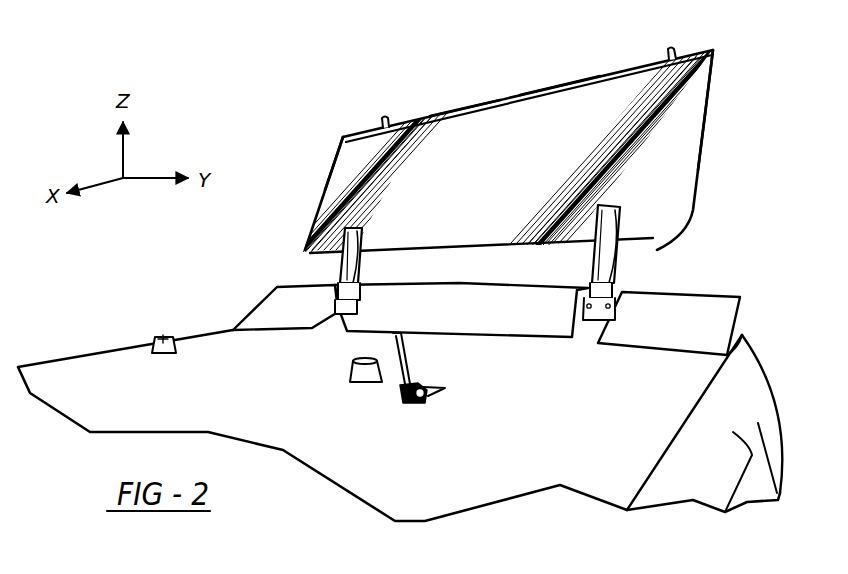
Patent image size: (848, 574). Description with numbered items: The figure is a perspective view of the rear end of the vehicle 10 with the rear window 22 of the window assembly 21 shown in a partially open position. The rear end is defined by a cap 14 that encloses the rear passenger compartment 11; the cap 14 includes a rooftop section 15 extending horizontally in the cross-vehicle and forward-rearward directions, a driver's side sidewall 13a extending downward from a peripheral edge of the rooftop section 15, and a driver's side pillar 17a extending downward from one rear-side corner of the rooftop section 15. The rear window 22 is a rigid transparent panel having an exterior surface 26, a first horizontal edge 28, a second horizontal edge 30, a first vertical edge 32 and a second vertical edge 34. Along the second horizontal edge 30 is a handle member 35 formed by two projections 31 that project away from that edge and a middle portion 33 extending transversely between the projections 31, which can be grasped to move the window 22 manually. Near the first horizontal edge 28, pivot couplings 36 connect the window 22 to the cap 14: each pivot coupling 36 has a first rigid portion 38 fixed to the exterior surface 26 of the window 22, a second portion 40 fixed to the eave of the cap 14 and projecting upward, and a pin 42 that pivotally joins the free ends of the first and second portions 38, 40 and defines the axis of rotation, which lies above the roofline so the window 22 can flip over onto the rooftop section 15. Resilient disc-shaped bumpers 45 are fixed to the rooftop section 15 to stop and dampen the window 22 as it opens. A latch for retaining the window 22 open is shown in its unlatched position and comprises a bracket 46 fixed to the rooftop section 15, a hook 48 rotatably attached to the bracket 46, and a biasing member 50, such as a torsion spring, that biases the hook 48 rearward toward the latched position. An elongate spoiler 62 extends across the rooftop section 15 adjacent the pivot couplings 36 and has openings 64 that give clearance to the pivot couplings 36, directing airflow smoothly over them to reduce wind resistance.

The vehicle 10 is at (110, 295).
The passenger compartment 11 is at (206, 0).
The driver's side sidewall 13a is at (748, 485).
The cap 14 is at (673, 388).
The rooftop section 15 is at (247, 402).
The driver's side pillar 17a is at (769, 413).
The window assembly 21 is at (716, 100).
The rear window 22 is at (301, 0).
The exterior surface 26 is at (515, 165).
The first horizontal edge 28 is at (648, 240).
The second horizontal edge 30 is at (637, 62).
The projections 31 is at (448, 0).
The first vertical edge 32 is at (706, 144).
The middle portion 33 is at (549, 77).
The second vertical edge 34 is at (332, 167).
The handle member 35 is at (459, 99).
The pivot coupling 36 is at (330, 267).
The first rigid portion 38 is at (352, 238).
The second portion 40 is at (345, 307).
The pin 42 is at (348, 297).
The bumpers 45 is at (162, 337).
The bracket 46 is at (426, 391).
The hook 48 is at (408, 350).
The biasing member 50 is at (410, 408).
The spoiler 62 is at (722, 310).
The openings 64 is at (335, 290).